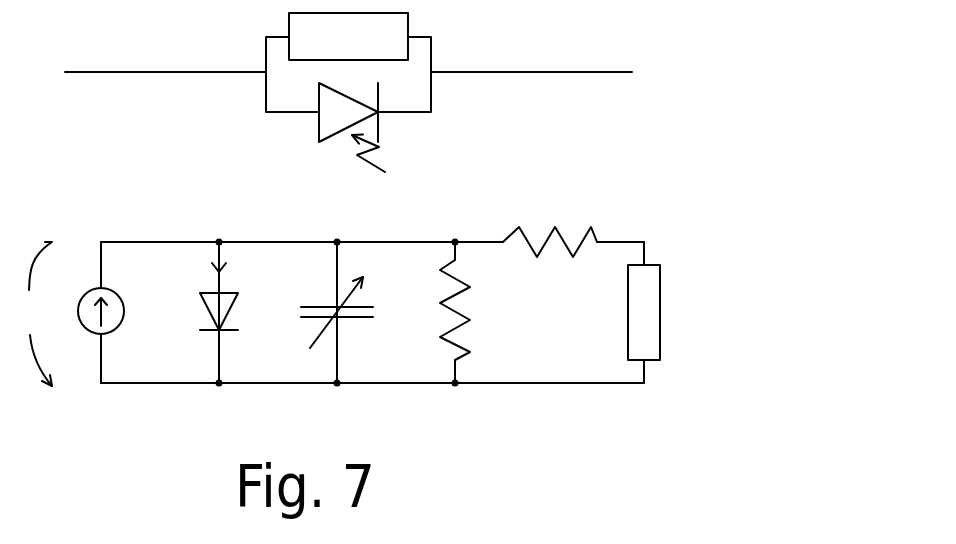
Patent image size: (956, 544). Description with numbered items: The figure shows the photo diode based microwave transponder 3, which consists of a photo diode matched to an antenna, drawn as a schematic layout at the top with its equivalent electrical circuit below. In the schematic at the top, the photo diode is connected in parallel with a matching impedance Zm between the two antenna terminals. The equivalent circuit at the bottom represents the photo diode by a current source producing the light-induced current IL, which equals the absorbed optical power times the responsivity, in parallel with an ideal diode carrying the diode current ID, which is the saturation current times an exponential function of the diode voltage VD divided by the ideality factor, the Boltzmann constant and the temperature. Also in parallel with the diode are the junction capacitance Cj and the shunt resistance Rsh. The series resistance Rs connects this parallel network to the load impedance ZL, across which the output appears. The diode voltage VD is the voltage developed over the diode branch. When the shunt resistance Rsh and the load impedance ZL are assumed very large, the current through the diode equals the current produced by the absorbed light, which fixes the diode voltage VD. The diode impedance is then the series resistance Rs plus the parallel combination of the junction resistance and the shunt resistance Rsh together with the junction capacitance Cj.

The photo diode based microwave transponder 3 is at (369, 200).
The matching impedance Zm is at (348, 37).
The light-induced current IL is at (121, 314).
The diode current ID is at (235, 312).
The junction capacitance Cj is at (358, 312).
The shunt resistance Rsh is at (486, 312).
The series resistance Rs is at (550, 221).
The load impedance ZL is at (623, 312).
The diode voltage VD is at (44, 314).